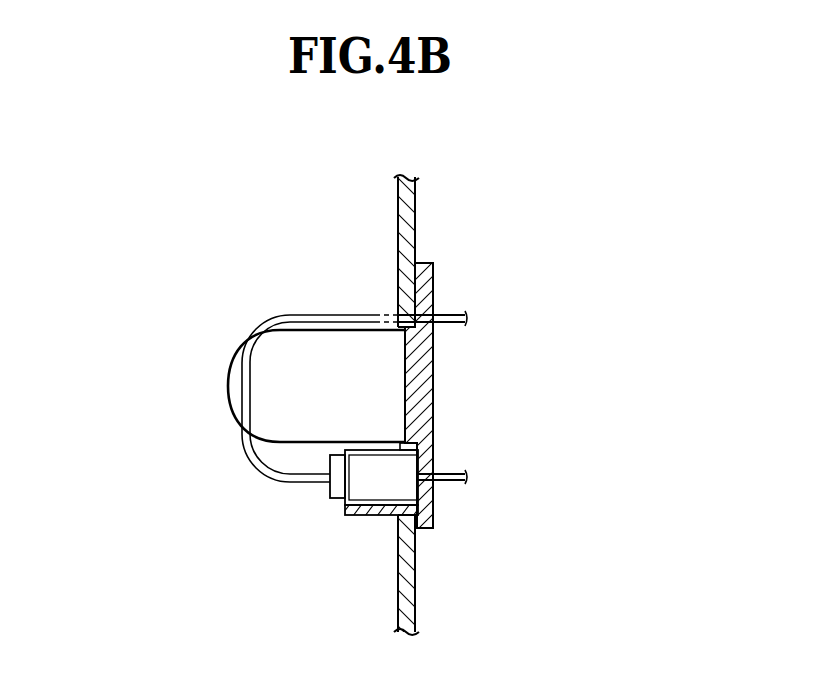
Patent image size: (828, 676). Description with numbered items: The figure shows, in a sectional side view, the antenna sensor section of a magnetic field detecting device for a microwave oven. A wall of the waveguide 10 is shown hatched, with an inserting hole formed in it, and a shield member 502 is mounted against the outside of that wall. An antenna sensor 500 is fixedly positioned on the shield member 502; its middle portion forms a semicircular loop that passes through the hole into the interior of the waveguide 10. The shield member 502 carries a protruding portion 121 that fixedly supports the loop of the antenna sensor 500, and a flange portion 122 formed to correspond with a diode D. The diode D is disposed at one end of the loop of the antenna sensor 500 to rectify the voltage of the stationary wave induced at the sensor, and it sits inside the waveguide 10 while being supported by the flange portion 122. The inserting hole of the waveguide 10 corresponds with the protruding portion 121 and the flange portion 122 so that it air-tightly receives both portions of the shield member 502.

The waveguide 10 is at (410, 215).
The shield member 502 is at (434, 279).
The antenna sensor 500 is at (303, 316).
The protruding portion 121 is at (235, 380).
The diode D is at (337, 490).
The flange portion 122 is at (362, 516).